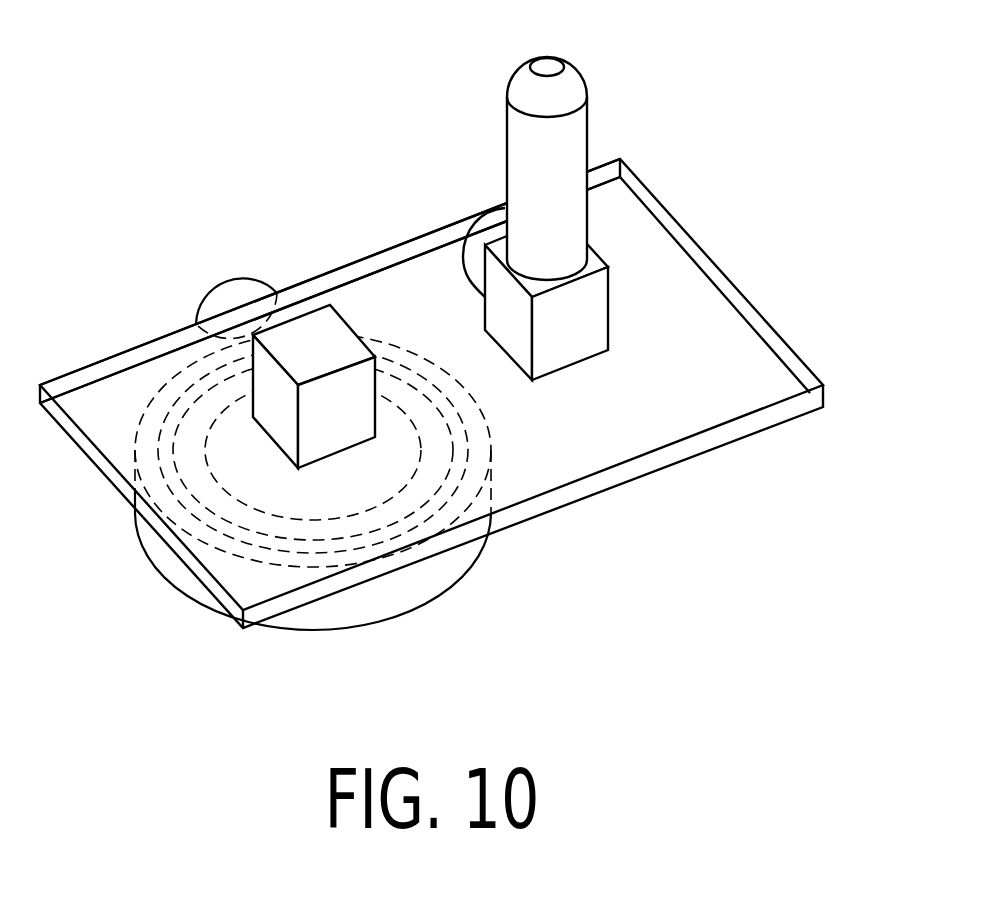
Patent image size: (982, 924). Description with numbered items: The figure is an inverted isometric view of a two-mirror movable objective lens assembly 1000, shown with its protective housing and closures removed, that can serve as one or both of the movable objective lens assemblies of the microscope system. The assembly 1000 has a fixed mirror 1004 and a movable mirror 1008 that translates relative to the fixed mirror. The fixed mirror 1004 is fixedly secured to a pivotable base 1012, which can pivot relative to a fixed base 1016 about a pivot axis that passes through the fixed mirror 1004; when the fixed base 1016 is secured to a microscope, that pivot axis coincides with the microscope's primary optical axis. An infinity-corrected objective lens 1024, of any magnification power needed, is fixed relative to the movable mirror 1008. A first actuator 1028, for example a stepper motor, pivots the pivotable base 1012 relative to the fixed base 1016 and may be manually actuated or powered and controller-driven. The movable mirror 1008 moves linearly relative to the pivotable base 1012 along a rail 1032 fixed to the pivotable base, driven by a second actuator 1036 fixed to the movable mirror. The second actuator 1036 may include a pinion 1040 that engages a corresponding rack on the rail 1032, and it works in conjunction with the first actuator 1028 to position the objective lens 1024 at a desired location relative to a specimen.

The two-mirror movable objective lens assembly 1000 is at (786, 150).
The fixed mirror 1004 is at (333, 428).
The movable mirror 1008 is at (580, 322).
The pivotable base 1012 is at (555, 458).
The fixed base 1016 is at (387, 590).
The infinity-corrected objective lens 1024 is at (557, 140).
The first actuator 1028 is at (235, 287).
The rail 1032 is at (372, 303).
The second actuator 1036 is at (415, 272).
The pinion 1040 is at (485, 213).